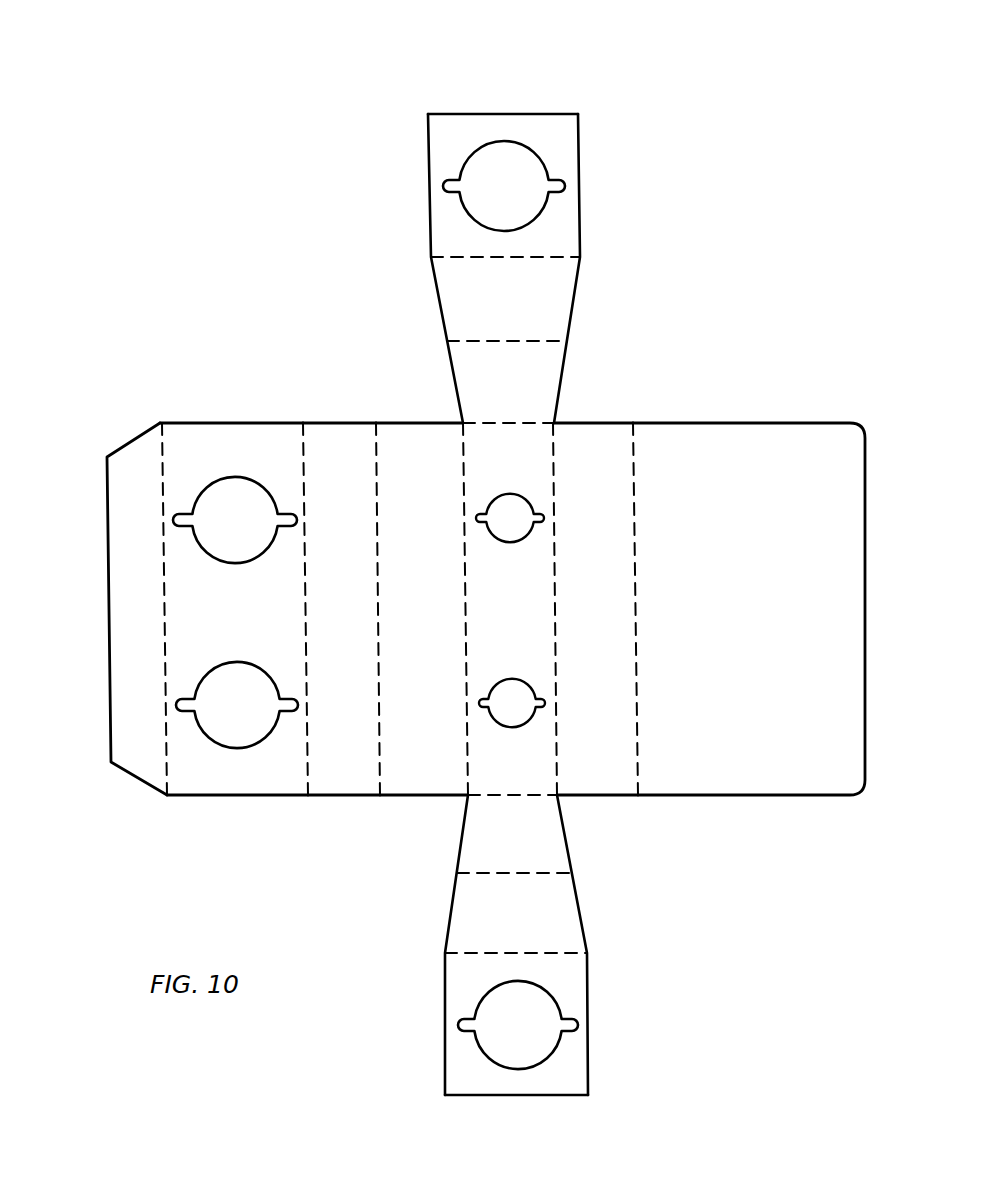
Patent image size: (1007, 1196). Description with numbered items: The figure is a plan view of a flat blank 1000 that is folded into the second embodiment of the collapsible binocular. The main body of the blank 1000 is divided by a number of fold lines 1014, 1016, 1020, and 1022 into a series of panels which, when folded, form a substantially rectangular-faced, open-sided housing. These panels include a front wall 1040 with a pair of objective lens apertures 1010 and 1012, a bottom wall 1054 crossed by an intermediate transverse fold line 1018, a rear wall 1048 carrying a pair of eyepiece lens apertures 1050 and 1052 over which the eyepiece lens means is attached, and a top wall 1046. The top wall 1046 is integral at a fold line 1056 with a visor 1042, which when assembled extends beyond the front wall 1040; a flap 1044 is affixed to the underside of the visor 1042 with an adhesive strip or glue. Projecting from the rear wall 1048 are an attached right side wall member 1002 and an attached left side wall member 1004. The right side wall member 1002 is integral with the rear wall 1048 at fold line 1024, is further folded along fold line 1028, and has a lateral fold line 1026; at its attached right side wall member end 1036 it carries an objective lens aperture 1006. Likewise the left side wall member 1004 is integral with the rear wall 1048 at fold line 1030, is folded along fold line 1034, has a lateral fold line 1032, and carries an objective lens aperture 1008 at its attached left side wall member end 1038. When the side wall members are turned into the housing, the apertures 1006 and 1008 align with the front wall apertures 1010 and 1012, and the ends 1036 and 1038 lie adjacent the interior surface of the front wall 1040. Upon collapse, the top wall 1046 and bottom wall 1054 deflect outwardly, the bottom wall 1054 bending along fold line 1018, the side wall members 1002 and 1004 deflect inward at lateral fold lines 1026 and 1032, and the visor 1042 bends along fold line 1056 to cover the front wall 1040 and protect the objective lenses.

The blank 1000 is at (690, 359).
The attached right side wall member 1002 is at (452, 374).
The attached left side wall member 1004 is at (455, 900).
The objective lens aperture 1006 is at (534, 167).
The objective lens aperture 1008 is at (560, 1013).
The objective lens aperture 1010 is at (223, 490).
The objective lens aperture 1012 is at (216, 737).
The fold line 1014 is at (166, 688).
The fold line 1016 is at (305, 650).
The intermediate transverse fold line 1018 is at (378, 594).
The fold line 1020 is at (466, 648).
The fold line 1022 is at (555, 583).
The fold line 1024 is at (506, 423).
The lateral fold line 1026 is at (476, 340).
The fold line 1028 is at (458, 259).
The fold line 1030 is at (530, 797).
The lateral fold line 1032 is at (505, 875).
The fold line 1034 is at (577, 950).
The attached right side wall member end 1036 is at (460, 133).
The attached left side wall member end 1038 is at (493, 1098).
The front wall 1040 is at (181, 440).
The visor 1042 is at (768, 432).
The flap 1044 is at (121, 524).
The top wall 1046 is at (604, 785).
The rear wall 1048 is at (546, 670).
The eyepiece lens aperture 1050 is at (535, 466).
The eyepiece lens aperture 1052 is at (538, 770).
The bottom wall 1054 is at (397, 797).
The fold line 1056 is at (634, 514).